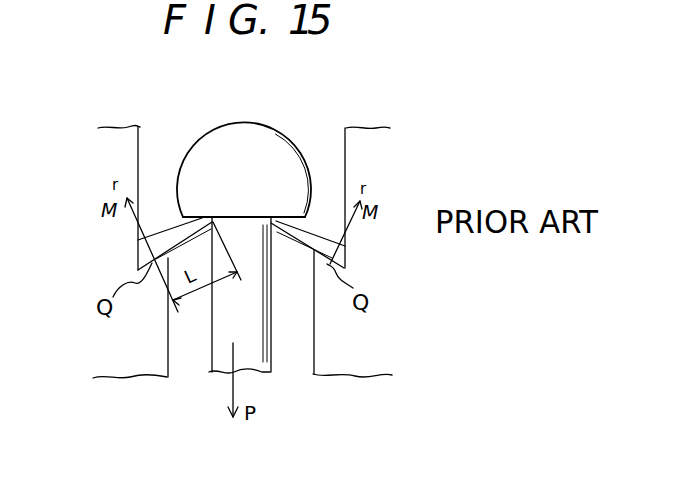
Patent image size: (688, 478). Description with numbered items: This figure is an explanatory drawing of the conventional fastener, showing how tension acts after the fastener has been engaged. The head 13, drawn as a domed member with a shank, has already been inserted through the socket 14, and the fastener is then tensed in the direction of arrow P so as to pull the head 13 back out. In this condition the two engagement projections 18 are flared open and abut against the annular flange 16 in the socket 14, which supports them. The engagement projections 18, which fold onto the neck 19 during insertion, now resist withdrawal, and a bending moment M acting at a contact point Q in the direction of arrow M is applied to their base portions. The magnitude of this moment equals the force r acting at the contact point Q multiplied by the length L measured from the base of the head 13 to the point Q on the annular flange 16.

The head 13 is at (284, 136).
The socket 14 is at (145, 153).
The annular flange 16 is at (147, 342).
The engagement projections 18 is at (138, 250).
The neck 19 is at (265, 345).